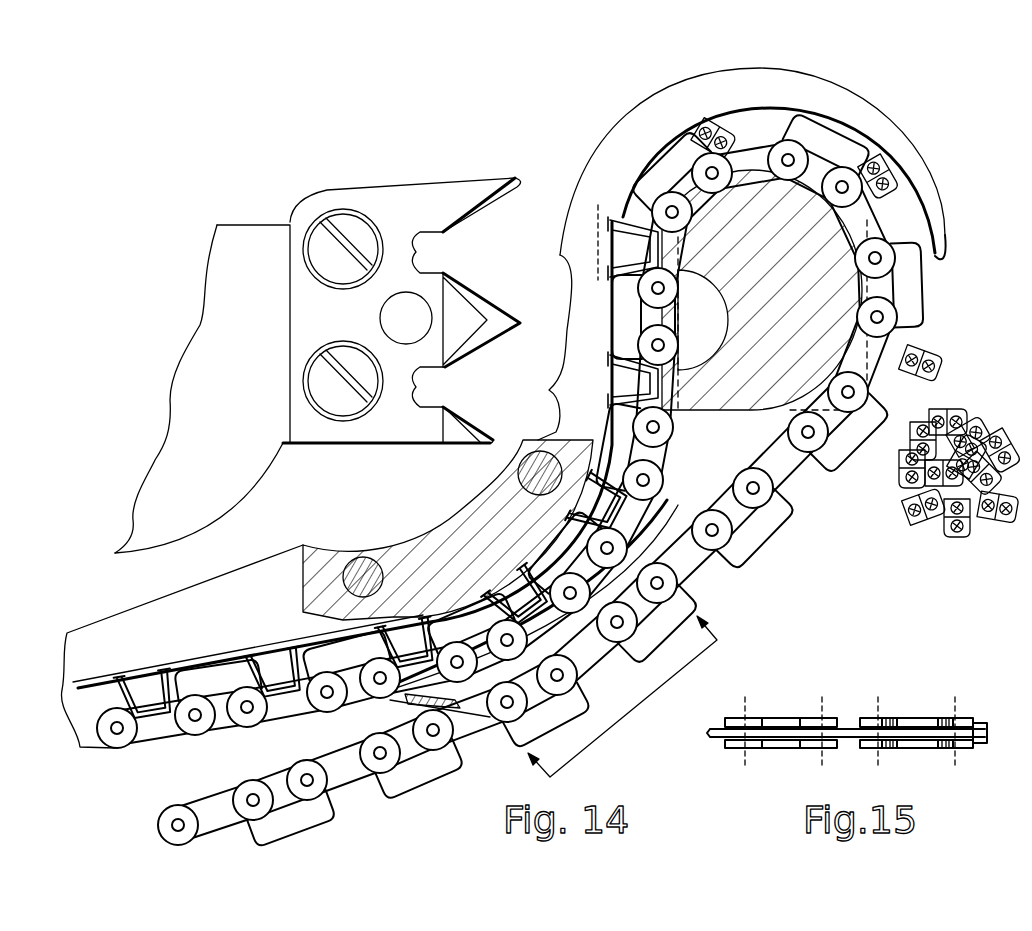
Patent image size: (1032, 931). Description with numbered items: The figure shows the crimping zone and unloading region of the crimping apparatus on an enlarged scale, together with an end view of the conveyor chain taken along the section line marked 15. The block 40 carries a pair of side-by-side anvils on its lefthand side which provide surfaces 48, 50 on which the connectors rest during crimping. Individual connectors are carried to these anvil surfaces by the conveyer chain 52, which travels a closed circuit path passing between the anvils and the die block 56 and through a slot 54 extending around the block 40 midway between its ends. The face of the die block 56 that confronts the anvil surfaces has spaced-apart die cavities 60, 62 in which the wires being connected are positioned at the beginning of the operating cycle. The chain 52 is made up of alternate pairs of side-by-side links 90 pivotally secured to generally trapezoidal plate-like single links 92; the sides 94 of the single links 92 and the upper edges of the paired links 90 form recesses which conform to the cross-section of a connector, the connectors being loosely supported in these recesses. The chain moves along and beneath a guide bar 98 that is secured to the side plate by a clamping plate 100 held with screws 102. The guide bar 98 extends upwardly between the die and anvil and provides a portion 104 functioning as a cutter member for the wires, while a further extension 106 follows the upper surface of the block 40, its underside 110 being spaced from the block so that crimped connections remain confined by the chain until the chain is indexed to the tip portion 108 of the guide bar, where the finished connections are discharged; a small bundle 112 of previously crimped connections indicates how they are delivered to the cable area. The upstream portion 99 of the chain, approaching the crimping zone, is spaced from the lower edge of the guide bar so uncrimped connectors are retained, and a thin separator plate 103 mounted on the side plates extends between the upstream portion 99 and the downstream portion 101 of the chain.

In FIG. 14, the block 40 is at (737, 402).
In FIG. 14, the anvil supporting surface 48 is at (655, 254).
In FIG. 14, the anvil supporting surface 50 is at (652, 387).
In FIG. 14, the conveyer chain 52 is at (792, 517).
In FIG. 14, the slot 54 is at (665, 176).
In FIG. 14, the die block 56 is at (430, 188).
In FIG. 14, the die cavity 60 is at (426, 238).
In FIG. 14, the die cavity 62 is at (427, 408).
In FIG. 15, the side-by-side links 90 is at (780, 716).
In FIG. 15, the plate-like single link 92 is at (855, 725).
In FIG. 14, the sides 94 is at (702, 572).
In FIG. 14, the guide bar 98 is at (258, 562).
In FIG. 14, the upstream portion 99 is at (197, 737).
In FIG. 14, the clamping plate 100 is at (448, 537).
In FIG. 14, the downstream portion 101 is at (392, 797).
In FIG. 14, the screws 102 is at (540, 451).
In FIG. 14, the separator plate 103 is at (407, 704).
In FIG. 14, the portion 104 is at (578, 287).
In FIG. 14, the extension 106 is at (793, 70).
In FIG. 14, the tip portion 108 is at (940, 252).
In FIG. 14, the underside 110 is at (762, 108).
In FIG. 14, the bundle 112 is at (990, 427).
In FIG. 14, the section line 15 is at (612, 699).